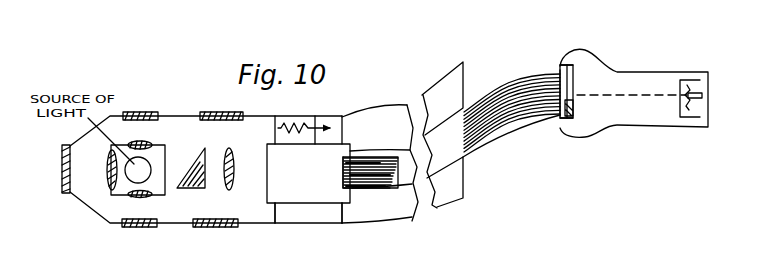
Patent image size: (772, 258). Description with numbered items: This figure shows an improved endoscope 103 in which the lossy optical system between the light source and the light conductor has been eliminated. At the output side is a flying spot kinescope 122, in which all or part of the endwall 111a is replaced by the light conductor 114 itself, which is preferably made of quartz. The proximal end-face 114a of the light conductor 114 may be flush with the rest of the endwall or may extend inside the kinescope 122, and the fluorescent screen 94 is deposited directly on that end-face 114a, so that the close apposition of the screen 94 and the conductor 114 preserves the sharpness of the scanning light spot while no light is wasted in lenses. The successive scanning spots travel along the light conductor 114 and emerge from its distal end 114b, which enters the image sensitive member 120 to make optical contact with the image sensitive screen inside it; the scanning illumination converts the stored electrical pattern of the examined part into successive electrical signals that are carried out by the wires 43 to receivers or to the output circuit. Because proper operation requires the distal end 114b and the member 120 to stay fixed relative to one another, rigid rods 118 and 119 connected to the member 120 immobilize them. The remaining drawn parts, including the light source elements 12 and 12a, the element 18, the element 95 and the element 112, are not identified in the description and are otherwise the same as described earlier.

The light source 12 is at (140, 113).
The light source end plate 12a is at (62, 163).
The lens holder 18 is at (222, 113).
The wires 43 is at (534, 24).
The fluorescent screen 94 is at (558, 70).
The connector plug 95 is at (572, 113).
The endoscope 103 is at (401, 103).
The endwall 111a is at (559, 65).
The output cable 112 is at (650, 97).
The light conductor 114 is at (369, 192).
The proximal end-face of the light conductor 114a is at (561, 119).
The distal end of the light conductor 114b is at (344, 158).
The rigid rod 118 is at (278, 126).
The rigid rod 119 is at (273, 210).
The image sensitive member 120 is at (307, 205).
The flying spot kinescope 122 is at (590, 60).